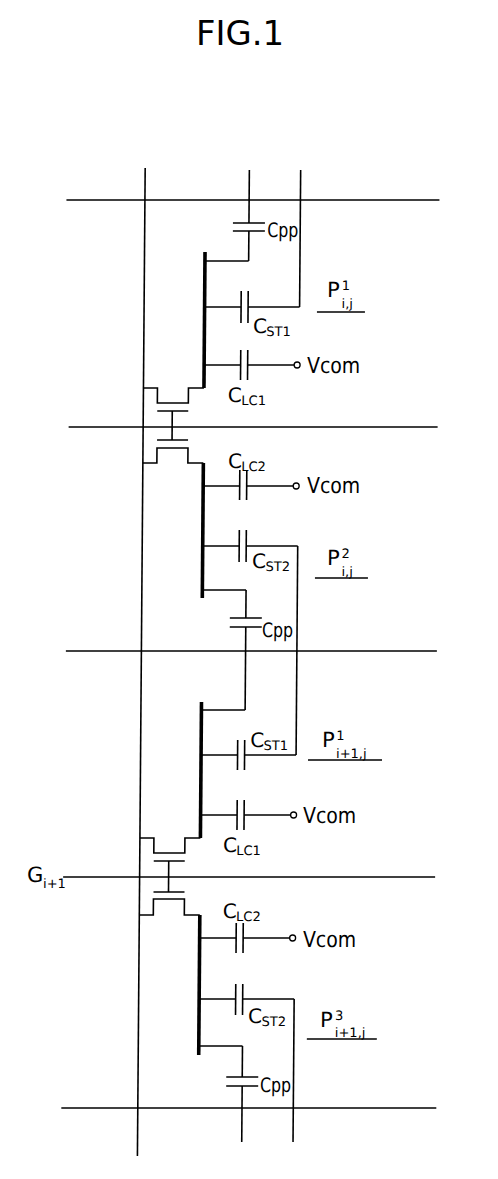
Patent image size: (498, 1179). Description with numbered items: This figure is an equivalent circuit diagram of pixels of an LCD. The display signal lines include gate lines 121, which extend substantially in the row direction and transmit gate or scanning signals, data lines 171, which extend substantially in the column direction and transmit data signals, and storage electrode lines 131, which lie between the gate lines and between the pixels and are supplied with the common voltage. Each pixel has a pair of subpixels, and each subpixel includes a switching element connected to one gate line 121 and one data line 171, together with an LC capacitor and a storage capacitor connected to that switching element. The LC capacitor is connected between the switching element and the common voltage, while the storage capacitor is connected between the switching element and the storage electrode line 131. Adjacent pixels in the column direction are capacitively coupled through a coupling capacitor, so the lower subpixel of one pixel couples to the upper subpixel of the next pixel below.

The storage electrode line 131 is at (102, 199).
The data line 171 is at (147, 285).
The gate line 121 is at (100, 428).